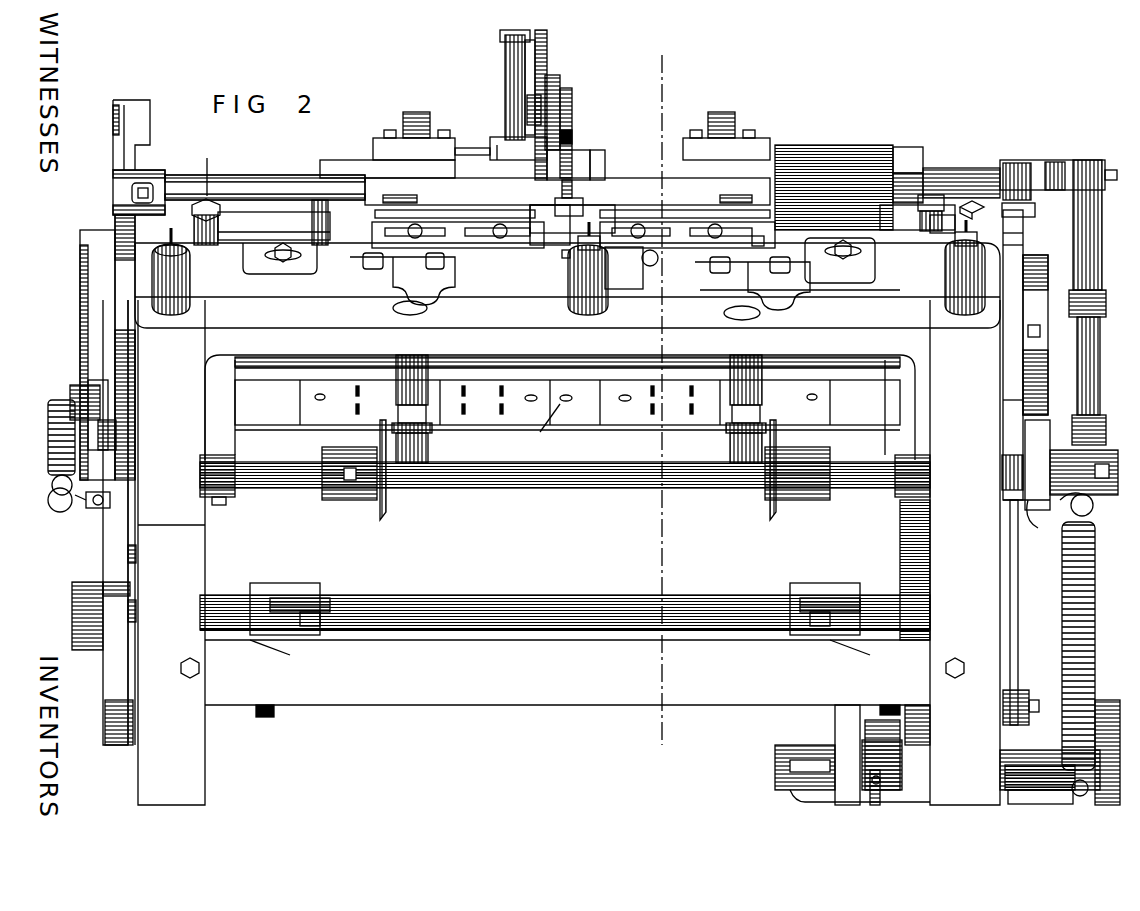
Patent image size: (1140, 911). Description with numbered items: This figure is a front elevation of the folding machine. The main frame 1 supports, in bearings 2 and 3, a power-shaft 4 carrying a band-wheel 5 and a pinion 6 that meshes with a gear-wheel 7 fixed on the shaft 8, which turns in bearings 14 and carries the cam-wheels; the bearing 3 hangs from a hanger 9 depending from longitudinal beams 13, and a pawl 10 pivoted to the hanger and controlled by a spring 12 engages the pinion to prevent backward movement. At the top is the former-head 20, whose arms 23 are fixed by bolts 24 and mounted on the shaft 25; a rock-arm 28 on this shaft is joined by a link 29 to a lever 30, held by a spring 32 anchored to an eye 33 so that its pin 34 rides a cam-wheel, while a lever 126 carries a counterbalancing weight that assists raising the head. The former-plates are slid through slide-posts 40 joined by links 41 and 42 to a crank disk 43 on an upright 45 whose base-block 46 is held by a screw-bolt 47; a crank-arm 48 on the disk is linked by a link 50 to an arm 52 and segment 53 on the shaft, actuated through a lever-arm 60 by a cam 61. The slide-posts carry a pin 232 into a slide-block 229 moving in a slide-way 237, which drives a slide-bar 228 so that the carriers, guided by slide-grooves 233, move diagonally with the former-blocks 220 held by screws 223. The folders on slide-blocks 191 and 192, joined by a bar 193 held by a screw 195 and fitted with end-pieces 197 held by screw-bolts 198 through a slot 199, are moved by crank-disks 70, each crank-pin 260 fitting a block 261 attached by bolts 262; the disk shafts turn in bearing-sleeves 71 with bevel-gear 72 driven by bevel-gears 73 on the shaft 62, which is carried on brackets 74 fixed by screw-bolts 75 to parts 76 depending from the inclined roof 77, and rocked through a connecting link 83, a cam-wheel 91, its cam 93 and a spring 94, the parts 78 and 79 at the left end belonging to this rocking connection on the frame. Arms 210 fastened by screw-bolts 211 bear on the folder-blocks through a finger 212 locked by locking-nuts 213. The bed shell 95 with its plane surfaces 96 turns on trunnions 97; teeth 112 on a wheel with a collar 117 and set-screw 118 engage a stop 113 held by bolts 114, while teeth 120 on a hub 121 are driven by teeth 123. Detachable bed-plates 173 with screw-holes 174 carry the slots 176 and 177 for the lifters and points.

The main frame 1 is at (205, 755).
The bearing 2 is at (1040, 799).
The bearing 3 is at (795, 745).
The power-shaft 4 is at (1025, 750).
The band-wheel 5 is at (1108, 700).
The pinion 6 is at (920, 770).
The gear-wheel 7 is at (900, 540).
The shaft 8 is at (72, 604).
The hanger 9 is at (835, 718).
The pawl 10 is at (870, 785).
The spring 12 is at (930, 800).
The longitudinal beams 13 is at (567, 661).
The bearings 14 is at (298, 593).
The former-head 20 is at (365, 163).
The arms 23 is at (416, 112).
The bolts 24 is at (386, 128).
The shaft 25 is at (262, 180).
The rock-arm 28 is at (1030, 160).
The link 29 is at (1078, 240).
The lever 30 is at (1078, 462).
The spring 32 is at (1105, 564).
The eye 33 is at (1081, 794).
The pin 34 is at (1060, 514).
The slide-posts 40 is at (578, 172).
The link 41 is at (572, 105).
The link 42 is at (572, 138).
The crank disk 43 is at (560, 80).
The upright 45 is at (527, 112).
The base-block 46 is at (536, 150).
The screw-bolt 47 is at (500, 160).
The crank-arm 48 is at (547, 42).
The link 50 is at (505, 70).
The arm 52 is at (932, 190).
The segment 53 is at (805, 150).
The lever-arm 60 is at (1018, 540).
The cam 61 is at (1018, 710).
The shaft 62 is at (536, 480).
The crank-disks 70 is at (455, 306).
The bearing-sleeves 71 is at (424, 350).
The bevel-gear 72 is at (432, 432).
The bevel-gears 73 is at (392, 512).
The brackets 74 is at (228, 485).
The screw-bolts 75 is at (220, 505).
The parts 76 is at (236, 440).
The inclined roof 77 is at (112, 227).
The block 78 is at (96, 446).
The clip 79 is at (92, 508).
The connecting link 83 is at (72, 384).
The cam-wheel 91 is at (106, 552).
The cam 93 is at (132, 590).
The spring 94 is at (48, 428).
The multiple bed cylinder or shell 95 is at (292, 428).
The plane surfaces 96 is at (559, 425).
The trunnions 97 is at (248, 345).
The teeth 112 is at (1000, 440).
The stop 113 is at (1035, 210).
The bolts 114 is at (972, 202).
The collar 117 is at (1038, 335).
The set-screw 118 is at (1028, 337).
The teeth 120 is at (135, 368).
The hub 121 is at (92, 313).
The teeth 123 is at (136, 550).
The lever 126 is at (130, 100).
The bed-plates 173 is at (312, 398).
The screw-holes 174 is at (531, 402).
The slot 176 is at (577, 396).
The slot 177 is at (356, 408).
The slide-block 191 is at (238, 292).
The slide-block 192 is at (871, 311).
The bar 193 is at (625, 289).
The screw 195 is at (662, 264).
The end-pieces 197 is at (255, 255).
The screw-bolts 198 is at (283, 266).
The slot 199 is at (300, 255).
The arms 210 is at (945, 300).
The screw-bolts 211 is at (978, 128).
The finger 212 is at (171, 240).
The locking-nuts 213 is at (562, 254).
The former-blocks 220 is at (573, 235).
The screws 223 is at (412, 238).
The slide-bar 228 is at (590, 210).
The slide-block 229 is at (569, 207).
The pin 232 is at (572, 190).
The slide-grooves 233 is at (405, 195).
The slide-way 237 is at (560, 220).
The crank-pin 260 is at (740, 320).
The block 261 is at (675, 307).
The bolts 262 is at (753, 246).